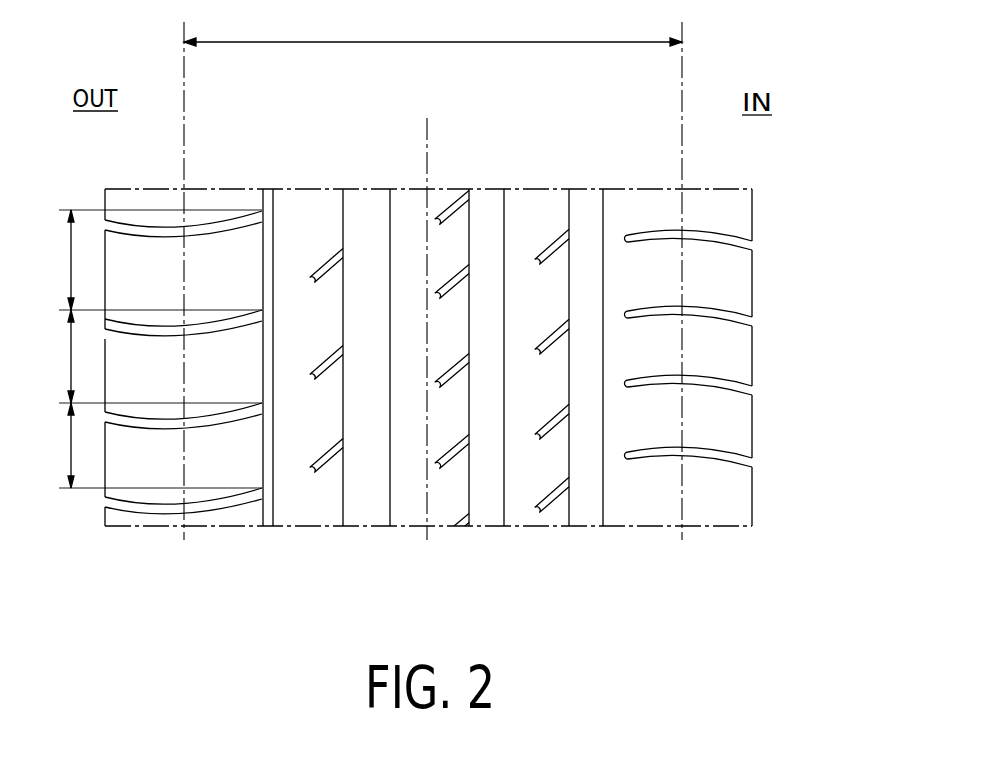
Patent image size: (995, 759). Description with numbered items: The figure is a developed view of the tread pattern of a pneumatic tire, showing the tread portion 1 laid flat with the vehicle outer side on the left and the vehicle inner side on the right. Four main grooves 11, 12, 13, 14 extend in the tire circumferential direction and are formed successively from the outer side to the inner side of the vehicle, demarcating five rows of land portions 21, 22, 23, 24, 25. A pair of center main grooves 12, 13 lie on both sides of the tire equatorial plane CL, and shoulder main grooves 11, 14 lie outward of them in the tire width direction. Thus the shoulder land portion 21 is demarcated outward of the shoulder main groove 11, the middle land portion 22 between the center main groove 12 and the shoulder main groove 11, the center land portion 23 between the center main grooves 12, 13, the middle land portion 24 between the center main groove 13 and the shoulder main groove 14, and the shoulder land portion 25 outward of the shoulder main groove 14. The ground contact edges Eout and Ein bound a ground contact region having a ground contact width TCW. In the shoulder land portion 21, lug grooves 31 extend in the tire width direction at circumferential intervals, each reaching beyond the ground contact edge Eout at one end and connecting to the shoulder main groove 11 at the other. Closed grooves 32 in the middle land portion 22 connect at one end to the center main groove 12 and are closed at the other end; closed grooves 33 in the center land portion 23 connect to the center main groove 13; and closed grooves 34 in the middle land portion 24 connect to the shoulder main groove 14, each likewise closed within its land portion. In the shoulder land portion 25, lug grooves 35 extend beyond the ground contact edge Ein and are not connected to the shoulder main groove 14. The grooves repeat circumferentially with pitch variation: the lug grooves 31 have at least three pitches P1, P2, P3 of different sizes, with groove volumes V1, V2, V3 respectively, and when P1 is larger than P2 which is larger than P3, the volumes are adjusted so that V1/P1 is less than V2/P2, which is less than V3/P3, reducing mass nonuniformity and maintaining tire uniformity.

The tread portion 1 is at (723, 187).
The shoulder main groove 11 is at (267, 200).
The center main groove 12 is at (362, 200).
The center main groove 13 is at (489, 200).
The shoulder main groove 14 is at (589, 200).
The shoulder land portion 21 is at (219, 203).
The middle land portion 22 is at (308, 201).
The center land portion 23 is at (407, 201).
The middle land portion 24 is at (536, 201).
The shoulder land portion 25 is at (627, 199).
The lug grooves 31 is at (224, 510).
The closed grooves 32 is at (322, 473).
The closed grooves 33 is at (447, 461).
The closed grooves 34 is at (553, 503).
The lug grooves 35 is at (657, 455).
The groove volume V1 is at (152, 232).
The groove volume V2 is at (150, 333).
The groove volume V3 is at (152, 423).
The pitch P1 is at (55, 260).
The pitch P2 is at (53, 356).
The pitch P3 is at (54, 445).
The ground contact width TCW is at (433, 277).
The tire equatorial plane CL is at (421, 315).
The ground contact edge Eout is at (183, 201).
The ground contact edge Ein is at (684, 205).